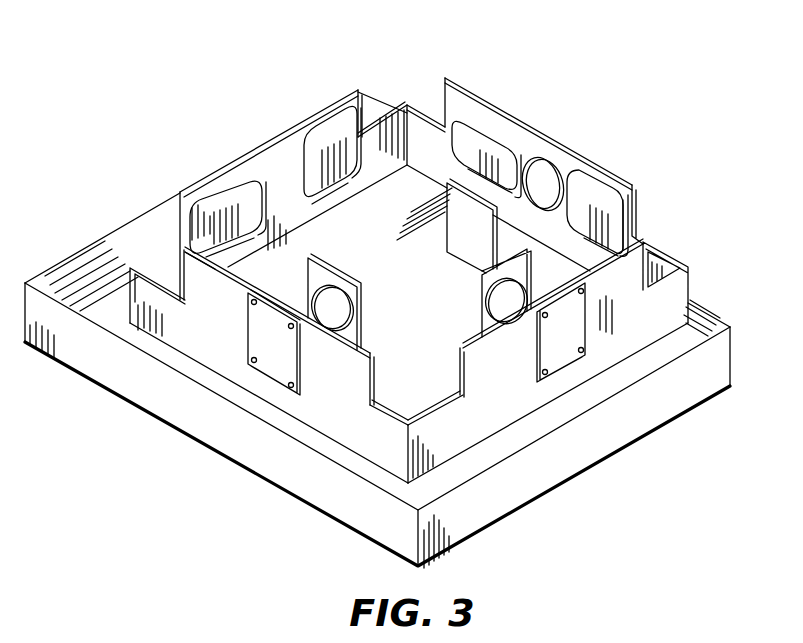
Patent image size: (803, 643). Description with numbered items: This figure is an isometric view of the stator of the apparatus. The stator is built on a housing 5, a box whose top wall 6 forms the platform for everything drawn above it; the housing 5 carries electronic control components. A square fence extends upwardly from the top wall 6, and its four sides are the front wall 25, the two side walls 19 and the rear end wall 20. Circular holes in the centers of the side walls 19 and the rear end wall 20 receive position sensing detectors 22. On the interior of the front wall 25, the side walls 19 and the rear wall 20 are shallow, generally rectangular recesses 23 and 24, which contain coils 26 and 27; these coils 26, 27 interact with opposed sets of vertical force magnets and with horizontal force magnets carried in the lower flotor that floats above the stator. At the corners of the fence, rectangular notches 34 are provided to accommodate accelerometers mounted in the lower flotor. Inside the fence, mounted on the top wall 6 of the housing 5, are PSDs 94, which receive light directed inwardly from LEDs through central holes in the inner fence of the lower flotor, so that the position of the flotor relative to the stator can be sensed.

The housing 5 is at (112, 363).
The top wall 6 is at (352, 256).
The side walls 19 is at (413, 169).
The rear end wall 20 is at (613, 334).
The position sensing detectors 22 is at (570, 170).
The recesses 23 is at (350, 118).
The recesses 24 is at (205, 170).
The front wall 25 is at (277, 150).
The coils 26 is at (357, 112).
The coils 27 is at (233, 197).
The rectangular notches 34 is at (147, 260).
The PSDs 94 is at (462, 243).